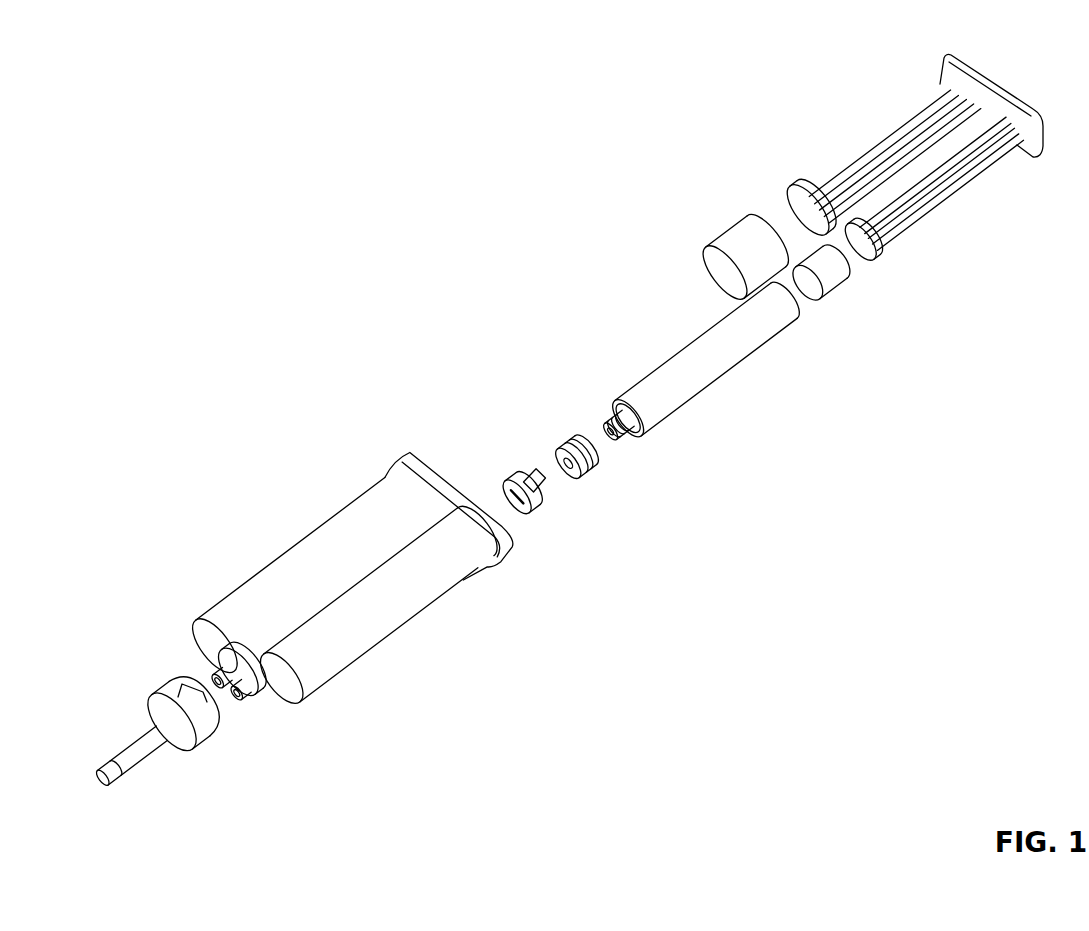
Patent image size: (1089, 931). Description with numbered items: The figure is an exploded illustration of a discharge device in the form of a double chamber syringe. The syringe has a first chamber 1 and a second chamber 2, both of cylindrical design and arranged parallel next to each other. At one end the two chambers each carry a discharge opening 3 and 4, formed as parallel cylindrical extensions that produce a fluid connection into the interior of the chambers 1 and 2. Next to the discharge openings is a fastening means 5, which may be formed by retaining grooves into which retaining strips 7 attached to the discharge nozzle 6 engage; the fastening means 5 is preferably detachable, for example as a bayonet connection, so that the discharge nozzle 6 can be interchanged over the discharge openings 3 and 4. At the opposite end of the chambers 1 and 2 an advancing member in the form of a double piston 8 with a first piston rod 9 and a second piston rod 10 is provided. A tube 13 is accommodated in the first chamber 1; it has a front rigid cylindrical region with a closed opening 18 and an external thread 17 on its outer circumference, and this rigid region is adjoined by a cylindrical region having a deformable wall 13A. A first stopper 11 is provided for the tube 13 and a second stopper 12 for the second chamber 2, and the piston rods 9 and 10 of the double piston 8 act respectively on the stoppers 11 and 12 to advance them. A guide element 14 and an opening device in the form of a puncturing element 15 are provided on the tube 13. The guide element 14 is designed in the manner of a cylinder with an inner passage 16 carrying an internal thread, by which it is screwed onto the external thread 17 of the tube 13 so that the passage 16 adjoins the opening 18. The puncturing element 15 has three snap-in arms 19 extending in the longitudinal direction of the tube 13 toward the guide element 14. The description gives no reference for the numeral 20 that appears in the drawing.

The first chamber 1 is at (418, 598).
The second chamber 2 is at (322, 551).
The discharge opening 3 is at (253, 697).
The discharge opening 4 is at (237, 637).
The fastening means 5 is at (273, 703).
The discharge nozzle 6 is at (175, 700).
The retaining strips 7 is at (190, 683).
The double piston 8 is at (850, 110).
The first piston rod 9 is at (947, 187).
The second piston rod 10 is at (845, 178).
The first stopper 11 is at (832, 268).
The second stopper 12 is at (733, 248).
The tube 13 is at (730, 347).
The deformable wall 13A is at (772, 318).
The guide element 14 is at (600, 473).
The puncturing element 15 is at (533, 507).
The inner passage 16 is at (560, 467).
The external thread 17 is at (633, 432).
The closed opening 18 is at (607, 420).
The snap-in arms 19 is at (528, 478).
The slot 20 is at (507, 483).